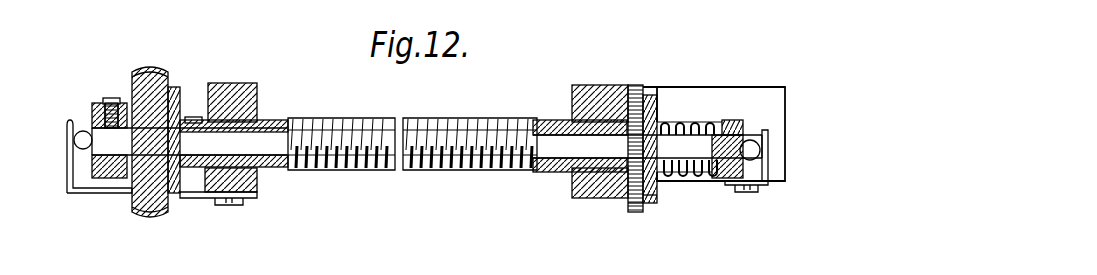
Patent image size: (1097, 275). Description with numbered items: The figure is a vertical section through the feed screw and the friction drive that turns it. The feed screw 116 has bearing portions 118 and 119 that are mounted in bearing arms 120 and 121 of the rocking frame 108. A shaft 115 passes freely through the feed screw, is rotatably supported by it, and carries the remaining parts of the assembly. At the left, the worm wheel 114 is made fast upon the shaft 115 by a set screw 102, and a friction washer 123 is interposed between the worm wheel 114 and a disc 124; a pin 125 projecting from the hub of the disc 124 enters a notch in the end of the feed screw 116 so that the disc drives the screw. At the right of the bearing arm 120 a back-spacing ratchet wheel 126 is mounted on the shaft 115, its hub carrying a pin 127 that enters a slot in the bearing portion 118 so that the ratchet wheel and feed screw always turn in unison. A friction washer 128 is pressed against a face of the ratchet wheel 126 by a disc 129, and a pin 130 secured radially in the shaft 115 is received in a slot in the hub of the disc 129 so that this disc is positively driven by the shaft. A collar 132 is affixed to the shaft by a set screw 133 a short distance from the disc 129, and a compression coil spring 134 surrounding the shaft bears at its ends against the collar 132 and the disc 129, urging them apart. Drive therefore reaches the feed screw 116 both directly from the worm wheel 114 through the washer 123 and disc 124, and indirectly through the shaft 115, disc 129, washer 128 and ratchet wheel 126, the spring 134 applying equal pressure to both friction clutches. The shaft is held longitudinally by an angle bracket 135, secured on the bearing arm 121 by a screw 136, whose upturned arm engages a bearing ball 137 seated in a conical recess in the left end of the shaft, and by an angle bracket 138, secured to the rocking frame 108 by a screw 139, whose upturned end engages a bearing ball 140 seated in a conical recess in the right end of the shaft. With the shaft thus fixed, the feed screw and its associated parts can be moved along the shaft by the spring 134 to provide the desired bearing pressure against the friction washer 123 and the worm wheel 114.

The rocking frame 108 is at (756, 87).
The set screw 102 is at (108, 98).
The worm wheel 114 is at (152, 67).
The shaft 115 is at (140, 148).
The feed screw 116 is at (469, 174).
The bearing portion 118 is at (569, 120).
The bearing portion 119 is at (279, 120).
The bearing arm 120 is at (612, 64).
The bearing arm 121 is at (234, 83).
The friction washer 123 is at (170, 194).
The disc 124 is at (183, 186).
The pin 125 is at (192, 116).
The back-spacing ratchet wheel 126 is at (633, 212).
The pin 127 is at (636, 85).
The friction washer 128 is at (646, 205).
The disc 129 is at (651, 195).
The pin 130 is at (660, 142).
The collar 132 is at (766, 130).
The set screw 133 is at (727, 120).
The compression coil spring 134 is at (706, 122).
The angle bracket 135 is at (85, 194).
The screw 136 is at (238, 206).
The bearing ball 137 is at (79, 136).
The angle bracket 138 is at (757, 191).
The screw 139 is at (738, 193).
The bearing ball 140 is at (761, 148).